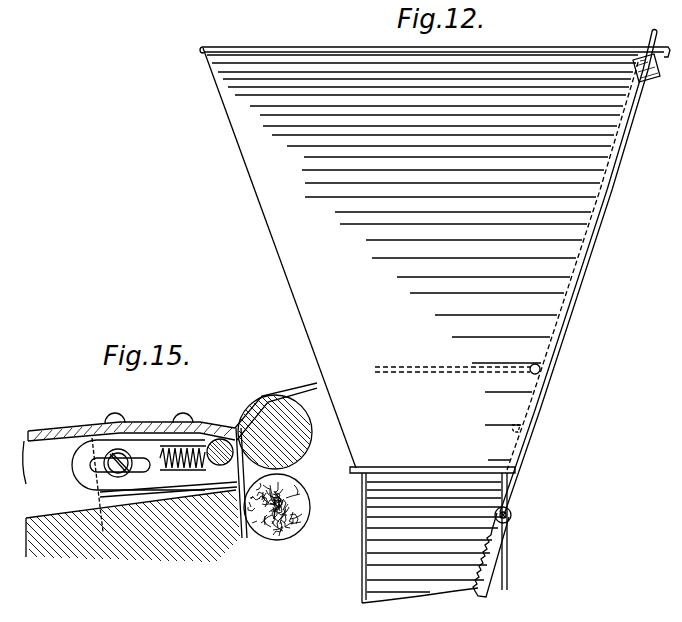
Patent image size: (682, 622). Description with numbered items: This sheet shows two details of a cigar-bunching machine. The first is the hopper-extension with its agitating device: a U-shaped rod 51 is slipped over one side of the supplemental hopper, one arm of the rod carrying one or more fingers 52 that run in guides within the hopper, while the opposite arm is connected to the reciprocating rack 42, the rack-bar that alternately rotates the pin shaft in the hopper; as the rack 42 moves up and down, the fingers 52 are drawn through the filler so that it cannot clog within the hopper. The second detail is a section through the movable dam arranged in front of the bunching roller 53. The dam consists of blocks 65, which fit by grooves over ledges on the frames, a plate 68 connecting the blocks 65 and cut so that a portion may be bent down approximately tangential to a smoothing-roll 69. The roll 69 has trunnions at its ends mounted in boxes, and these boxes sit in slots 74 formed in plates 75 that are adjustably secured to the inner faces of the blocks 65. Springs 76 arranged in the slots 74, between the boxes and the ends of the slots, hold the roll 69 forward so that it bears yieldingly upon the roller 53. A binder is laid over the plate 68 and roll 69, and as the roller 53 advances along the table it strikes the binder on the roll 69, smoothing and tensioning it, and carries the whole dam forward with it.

In FIG. 12, the rack 42 is at (510, 524).
In FIG. 12, the U-shaped rod 51 is at (606, 221).
In FIG. 12, the fingers 52 is at (460, 367).
In FIG. 15, the roller 53 is at (288, 432).
In FIG. 15, the blocks 65 is at (100, 433).
In FIG. 15, the plate 68 is at (57, 435).
In FIG. 15, the smoothing-roll 69 is at (247, 524).
In FIG. 15, the slots 74 is at (190, 470).
In FIG. 15, the plates 75 is at (133, 469).
In FIG. 15, the springs 76 is at (175, 490).